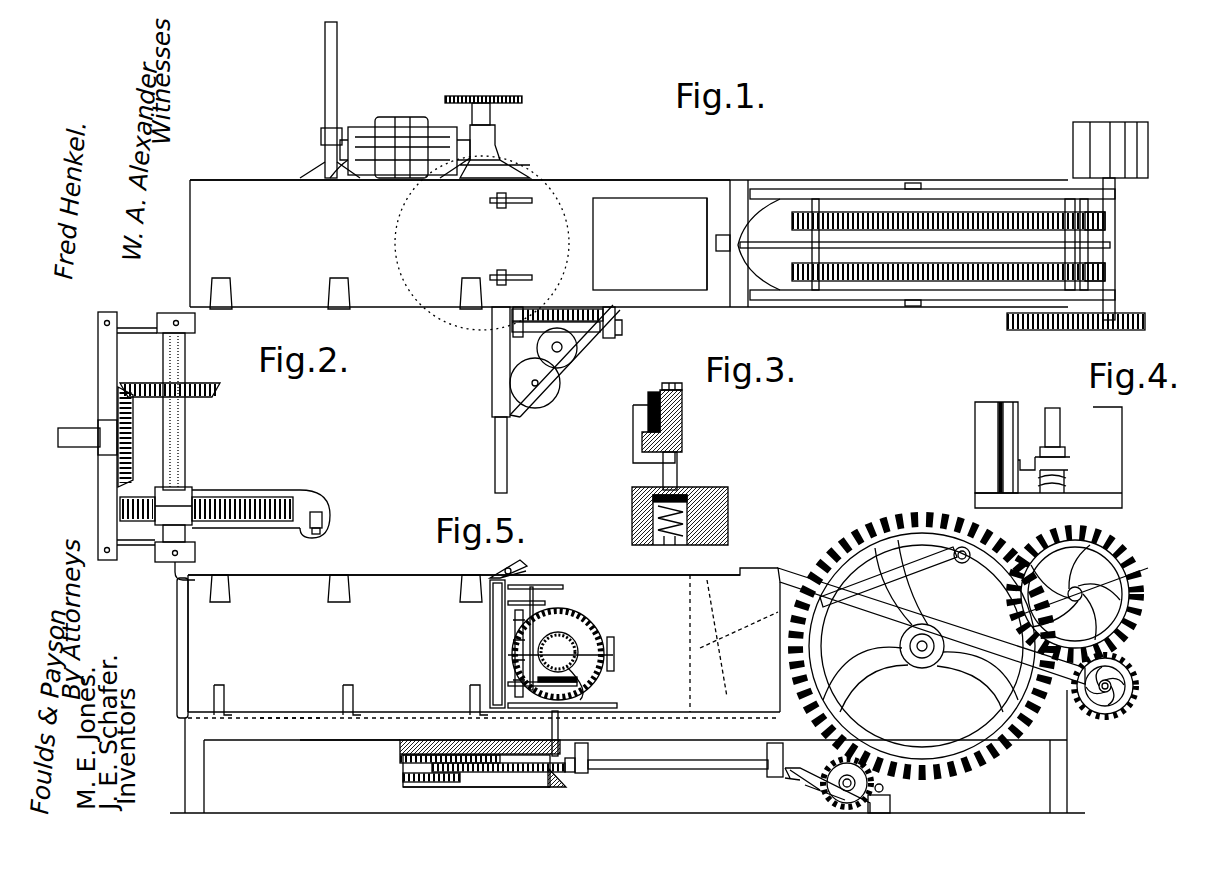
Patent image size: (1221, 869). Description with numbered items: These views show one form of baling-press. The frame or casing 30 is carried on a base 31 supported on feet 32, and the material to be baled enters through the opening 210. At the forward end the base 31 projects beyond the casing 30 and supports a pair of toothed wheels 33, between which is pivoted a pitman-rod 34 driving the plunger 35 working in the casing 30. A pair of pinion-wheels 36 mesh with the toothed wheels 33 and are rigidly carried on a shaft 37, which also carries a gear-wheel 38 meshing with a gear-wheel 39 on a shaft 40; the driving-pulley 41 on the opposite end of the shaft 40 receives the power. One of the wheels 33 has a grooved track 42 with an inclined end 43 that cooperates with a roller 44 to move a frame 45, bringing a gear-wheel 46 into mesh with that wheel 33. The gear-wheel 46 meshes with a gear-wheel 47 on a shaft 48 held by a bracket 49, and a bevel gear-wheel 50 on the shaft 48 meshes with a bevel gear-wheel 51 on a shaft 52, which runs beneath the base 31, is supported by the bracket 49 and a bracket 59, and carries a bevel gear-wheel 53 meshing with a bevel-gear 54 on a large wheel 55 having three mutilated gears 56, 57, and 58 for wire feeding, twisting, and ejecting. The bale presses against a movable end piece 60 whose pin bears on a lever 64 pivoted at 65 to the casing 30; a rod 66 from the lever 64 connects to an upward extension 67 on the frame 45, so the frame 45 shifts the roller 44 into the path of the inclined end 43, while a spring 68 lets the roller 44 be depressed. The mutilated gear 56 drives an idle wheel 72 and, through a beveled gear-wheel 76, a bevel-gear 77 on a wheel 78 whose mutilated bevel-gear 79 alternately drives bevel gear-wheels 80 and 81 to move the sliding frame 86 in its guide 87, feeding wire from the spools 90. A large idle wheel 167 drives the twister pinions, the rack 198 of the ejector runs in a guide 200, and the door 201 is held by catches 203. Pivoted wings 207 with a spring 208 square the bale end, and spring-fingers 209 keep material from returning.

In FIG. 1, the frame or casing 30 is at (614, 180).
In FIG. 5, the frame or casing 30 is at (635, 633).
In FIG. 5, the base 31 is at (328, 740).
In FIG. 5, the feet 32 is at (198, 782).
In FIG. 1, the toothed wheels 33 is at (997, 270).
In FIG. 3, the toothed wheels 33 is at (672, 430).
In FIG. 5, the toothed wheels 33 is at (930, 523).
In FIG. 5, the pitman-rod 34 is at (928, 570).
In FIG. 1, the plunger 35 is at (703, 218).
In FIG. 5, the plunger 35 is at (690, 685).
In FIG. 1, the pinion-wheels 36 is at (1095, 280).
In FIG. 5, the pinion-wheels 36 is at (1100, 585).
In FIG. 1, the shaft 37 is at (1075, 250).
In FIG. 1, the gear-wheel 38 is at (1140, 316).
In FIG. 5, the gear-wheel 38 is at (1140, 545).
In FIG. 5, the gear-wheel 39 is at (1108, 716).
In FIG. 1, the shaft 40 is at (1112, 250).
In FIG. 5, the shaft 40 is at (1122, 670).
In FIG. 1, the driving-pulley 41 is at (1118, 152).
In FIG. 5, the driving-pulley 41 is at (1125, 706).
In FIG. 5, the grooved track 42 is at (893, 523).
In FIG. 5, the inclined end 43 is at (862, 540).
In FIG. 2, the roller 44 is at (320, 522).
In FIG. 3, the roller 44 is at (652, 398).
In FIG. 2, the frame 45 is at (262, 530).
In FIG. 3, the frame 45 is at (712, 495).
In FIG. 5, the frame 45 is at (845, 800).
In FIG. 2, the gear-wheel 46 is at (270, 502).
In FIG. 5, the gear-wheel 46 is at (852, 775).
In FIG. 2, the gear-wheel 47 is at (205, 500).
In FIG. 5, the gear-wheel 47 is at (836, 760).
In FIG. 2, the shaft 48 is at (172, 425).
In FIG. 2, the bracket 49 is at (164, 318).
In FIG. 5, the bracket 49 is at (790, 778).
In FIG. 2, the bevel gear-wheel 50 is at (210, 393).
In FIG. 2, the bevel gear-wheel 51 is at (118, 400).
In FIG. 2, the shaft 52 is at (90, 428).
In FIG. 5, the shaft 52 is at (670, 769).
In FIG. 5, the bevel gear-wheel 53 is at (552, 782).
In FIG. 5, the bevel-gear 54 is at (400, 748).
In FIG. 1, the large wheel 55 is at (455, 326).
In FIG. 5, the large wheel 55 is at (466, 787).
In FIG. 5, the mutilated gear 56 is at (508, 773).
In FIG. 5, the mutilated gear 57 is at (425, 782).
In FIG. 5, the mutilated gear 58 is at (395, 768).
In FIG. 5, the bracket 59 is at (583, 772).
In FIG. 5, the end piece 60 is at (197, 606).
In FIG. 5, the lever 64 is at (177, 622).
In FIG. 2, the pivot 65 is at (185, 572).
In FIG. 5, the rod 66 is at (288, 718).
In FIG. 2, the upward extension 67 is at (178, 503).
In FIG. 5, the upward extension 67 is at (810, 717).
In FIG. 3, the spring 68 is at (662, 525).
In FIG. 5, the idle wheel 72 is at (576, 757).
In FIG. 1, the beveled gear-wheel 76 is at (568, 358).
In FIG. 5, the beveled gear-wheel 76 is at (590, 670).
In FIG. 1, the bevel-gear 77 is at (596, 361).
In FIG. 5, the bevel-gear 77 is at (598, 672).
In FIG. 1, the wheel 78 is at (590, 307).
In FIG. 5, the wheel 78 is at (585, 624).
In FIG. 5, the mutilated bevel-gear 79 is at (578, 647).
In FIG. 1, the bevel gear-wheel 80 is at (612, 335).
In FIG. 5, the bevel gear-wheel 80 is at (616, 646).
In FIG. 1, the bevel gear-wheel 81 is at (522, 308).
In FIG. 5, the bevel gear-wheel 81 is at (512, 648).
In FIG. 5, the sliding frame 86 is at (513, 660).
In FIG. 5, the guide 87 is at (490, 624).
In FIG. 1, the spools 90 is at (552, 390).
In FIG. 5, the spools 90 is at (540, 592).
In FIG. 1, the idle wheel 167 is at (510, 95).
In FIG. 1, the rack 198 is at (325, 75).
In FIG. 1, the guide 200 is at (321, 140).
In FIG. 5, the door 201 is at (484, 643).
In FIG. 5, the catches 203 is at (353, 696).
In FIG. 4, the pivoted wings 207 is at (1008, 405).
In FIG. 4, the spring 208 is at (1068, 468).
In FIG. 1, the spring-fingers 209 is at (523, 270).
In FIG. 5, the spring-fingers 209 is at (488, 566).
In FIG. 1, the opening 210 is at (661, 244).